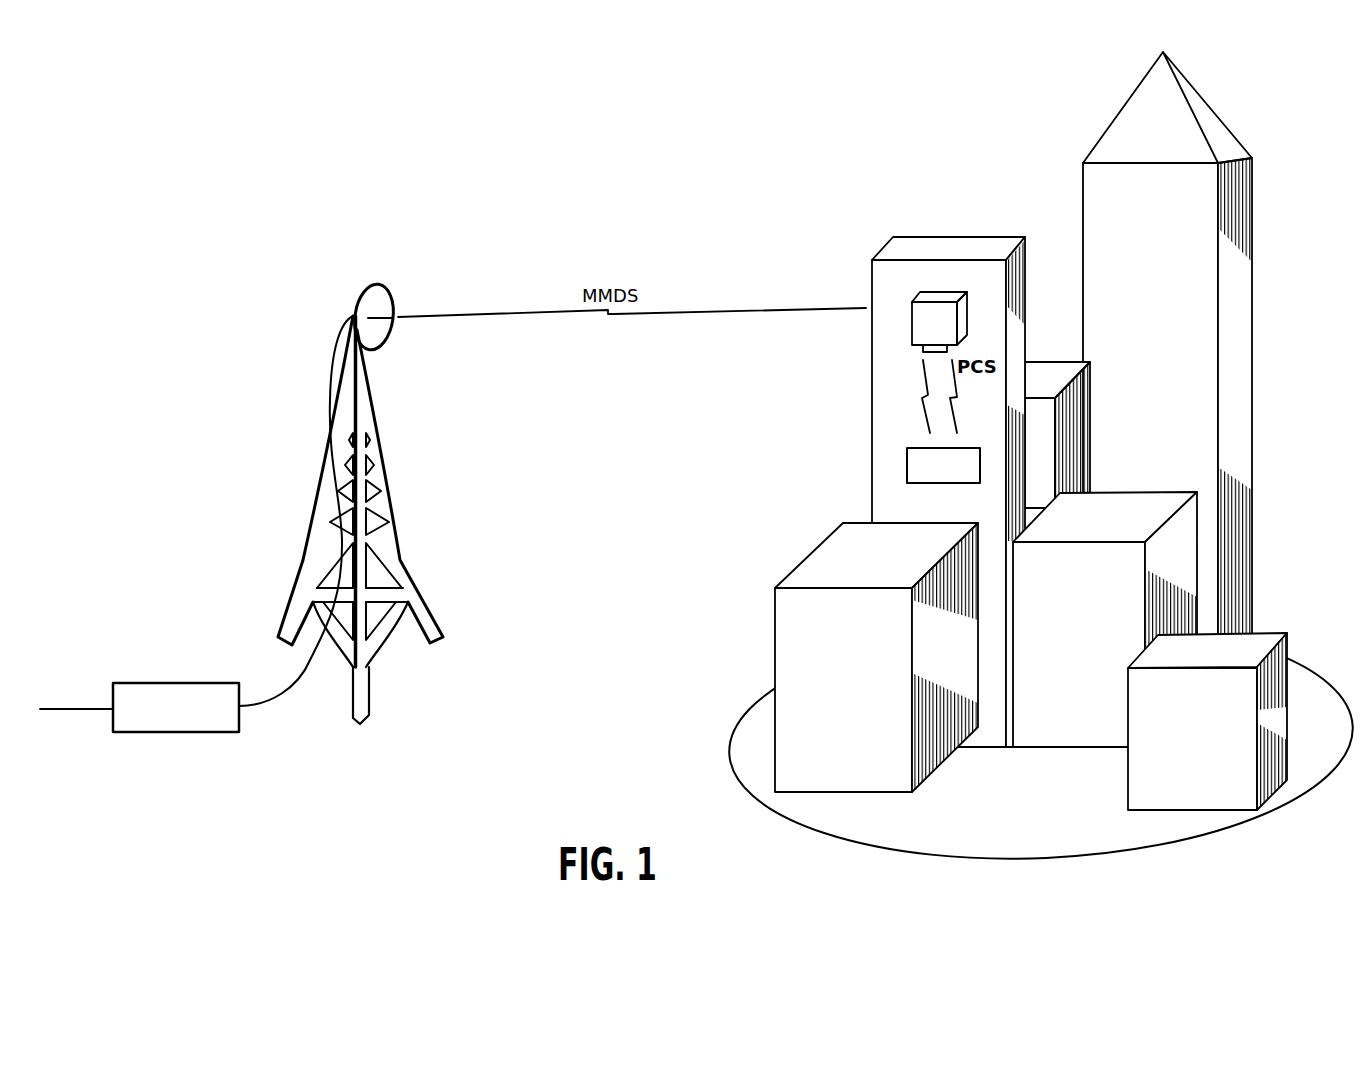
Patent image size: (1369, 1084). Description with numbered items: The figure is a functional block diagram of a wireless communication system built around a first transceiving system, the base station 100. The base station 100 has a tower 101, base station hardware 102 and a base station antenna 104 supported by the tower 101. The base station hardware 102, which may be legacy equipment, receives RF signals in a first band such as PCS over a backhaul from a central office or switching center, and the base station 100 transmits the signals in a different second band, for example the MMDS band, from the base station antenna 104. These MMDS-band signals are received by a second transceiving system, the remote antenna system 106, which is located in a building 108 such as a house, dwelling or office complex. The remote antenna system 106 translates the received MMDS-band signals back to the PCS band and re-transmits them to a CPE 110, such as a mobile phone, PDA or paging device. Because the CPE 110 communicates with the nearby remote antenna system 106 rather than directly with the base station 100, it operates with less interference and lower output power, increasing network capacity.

The base station 100 is at (437, 411).
The tower 101 is at (381, 472).
The base station hardware 102 is at (171, 683).
The base station antenna 104 is at (374, 284).
The remote antenna system 106 is at (948, 293).
The building 108 is at (873, 388).
The customer premises equipment (CPE) 110 is at (907, 467).